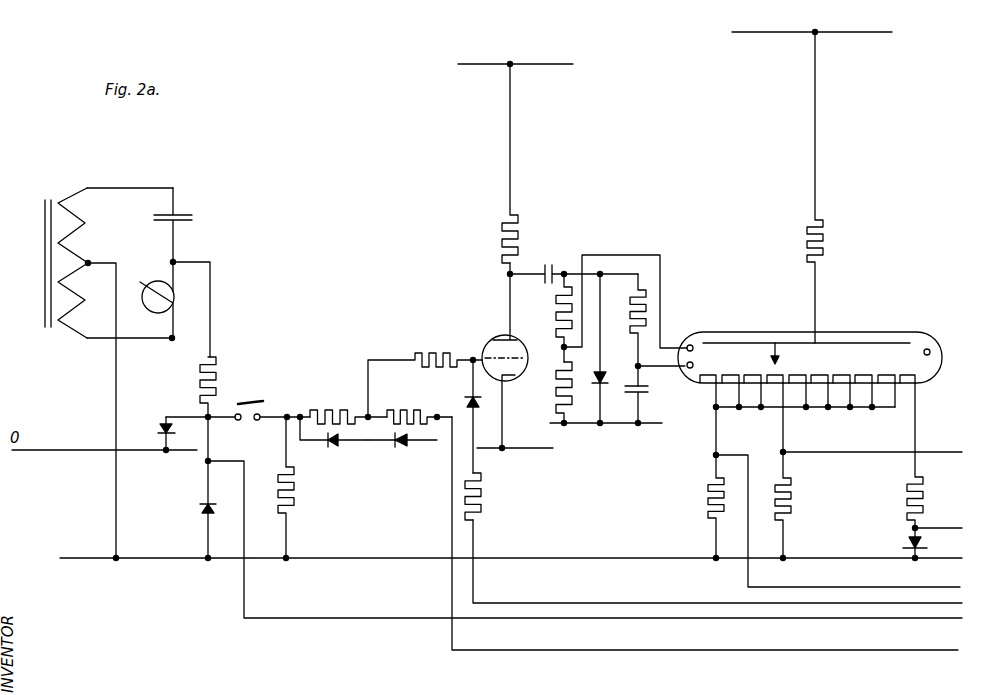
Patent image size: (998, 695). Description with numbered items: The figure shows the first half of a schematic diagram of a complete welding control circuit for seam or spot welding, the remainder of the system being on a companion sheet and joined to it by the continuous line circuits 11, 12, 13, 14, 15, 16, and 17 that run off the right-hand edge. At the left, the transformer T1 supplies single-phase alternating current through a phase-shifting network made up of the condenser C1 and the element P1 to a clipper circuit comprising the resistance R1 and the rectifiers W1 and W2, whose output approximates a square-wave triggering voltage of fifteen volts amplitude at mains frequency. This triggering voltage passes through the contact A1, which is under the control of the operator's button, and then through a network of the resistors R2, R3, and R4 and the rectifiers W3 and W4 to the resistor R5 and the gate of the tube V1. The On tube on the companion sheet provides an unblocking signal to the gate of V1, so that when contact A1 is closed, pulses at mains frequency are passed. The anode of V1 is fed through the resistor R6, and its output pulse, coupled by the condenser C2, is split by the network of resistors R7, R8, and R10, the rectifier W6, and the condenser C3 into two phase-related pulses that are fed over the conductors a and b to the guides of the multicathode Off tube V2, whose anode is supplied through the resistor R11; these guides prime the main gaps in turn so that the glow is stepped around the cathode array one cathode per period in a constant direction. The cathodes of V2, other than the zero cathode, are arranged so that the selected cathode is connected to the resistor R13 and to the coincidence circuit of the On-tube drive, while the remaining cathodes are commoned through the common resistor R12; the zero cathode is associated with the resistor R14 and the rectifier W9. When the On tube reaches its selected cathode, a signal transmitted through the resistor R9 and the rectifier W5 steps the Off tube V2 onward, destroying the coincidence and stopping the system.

The transformer T1 is at (106, 363).
The phase-shifting network condenser C1 is at (193, 218).
The phase-shifting network element P1 is at (168, 301).
The resistance R1 is at (218, 380).
The contact A1 is at (258, 401).
The rectifier W1 is at (163, 428).
The rectifier W2 is at (202, 505).
The resistor R2 is at (296, 488).
The resistor R3 is at (340, 402).
The resistor R4 is at (427, 405).
The rectifier W3 is at (334, 443).
The rectifier W4 is at (402, 451).
The resistor R5 is at (450, 340).
The gate tube V1 is at (497, 338).
The rectifier W5 is at (481, 404).
The resistor R6 is at (518, 236).
The condenser C2 is at (547, 262).
The resistor R7 is at (557, 309).
The resistor R8 is at (557, 388).
The rectifier W6 is at (613, 350).
The condenser C3 is at (660, 398).
The resistor R9 is at (492, 488).
The resistor R10 is at (648, 290).
The anode resistor R11 is at (826, 238).
The Off tube V2 is at (790, 334).
The conductor a is at (686, 347).
The conductor b is at (683, 370).
The common resistor R12 is at (707, 491).
The resistor R13 is at (795, 491).
The resistor R14 is at (925, 491).
The rectifier W9 is at (904, 543).
The line 11 is at (885, 453).
The line 12 is at (951, 529).
The line 13 is at (494, 559).
The line 14 is at (851, 526).
The line 15 is at (730, 566).
The line 16 is at (597, 544).
The line 17 is at (720, 538).